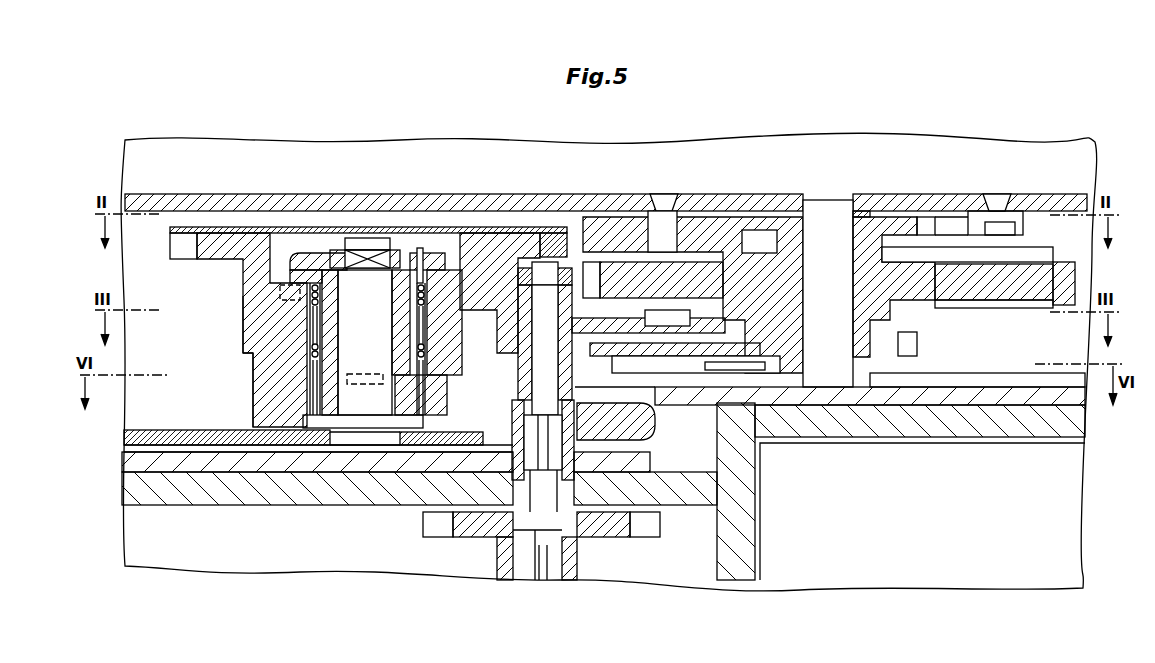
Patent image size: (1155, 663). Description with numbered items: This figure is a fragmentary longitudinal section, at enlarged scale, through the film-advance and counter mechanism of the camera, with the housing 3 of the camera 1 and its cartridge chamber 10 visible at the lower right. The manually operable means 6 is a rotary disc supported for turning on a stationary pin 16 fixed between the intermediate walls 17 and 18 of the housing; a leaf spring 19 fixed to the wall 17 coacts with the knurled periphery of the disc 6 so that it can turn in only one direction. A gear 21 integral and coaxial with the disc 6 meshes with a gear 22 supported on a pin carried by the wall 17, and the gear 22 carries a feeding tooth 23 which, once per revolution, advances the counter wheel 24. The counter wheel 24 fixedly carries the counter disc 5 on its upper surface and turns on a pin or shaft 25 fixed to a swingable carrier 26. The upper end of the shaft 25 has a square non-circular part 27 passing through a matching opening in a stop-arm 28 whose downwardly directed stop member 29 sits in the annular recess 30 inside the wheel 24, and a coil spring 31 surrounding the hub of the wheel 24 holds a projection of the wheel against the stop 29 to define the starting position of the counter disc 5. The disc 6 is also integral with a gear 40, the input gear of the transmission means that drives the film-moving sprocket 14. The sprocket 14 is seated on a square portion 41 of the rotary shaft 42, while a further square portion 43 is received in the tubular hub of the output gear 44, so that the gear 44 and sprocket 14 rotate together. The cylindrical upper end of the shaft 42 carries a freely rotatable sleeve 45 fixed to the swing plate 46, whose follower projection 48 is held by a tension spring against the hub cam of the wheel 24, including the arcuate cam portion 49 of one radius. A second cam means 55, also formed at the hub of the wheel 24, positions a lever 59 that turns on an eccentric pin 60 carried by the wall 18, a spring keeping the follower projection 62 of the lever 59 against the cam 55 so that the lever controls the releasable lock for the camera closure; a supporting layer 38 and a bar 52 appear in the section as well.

The machine tool 1 is at (434, 129).
The housing 3 is at (766, 148).
The counter disc 5 is at (210, 230).
The manually operable means 6 is at (1045, 300).
The cartridge chamber 10 is at (823, 553).
The film-moving means 14 is at (470, 527).
The stationary pin 16 is at (823, 216).
The intermediate wall 17 is at (1038, 205).
The intermediate wall 18 is at (905, 393).
The leaf spring 19 is at (948, 256).
The gear 21 is at (925, 222).
The gear 22 is at (705, 228).
The feeding tooth 23 is at (587, 250).
The counter wheel 24 is at (490, 250).
The pin or shaft 25 is at (352, 400).
The swingable carrier 26 is at (215, 432).
The non-circular part 27 is at (368, 238).
The stop-arm 28 is at (308, 262).
The stop member 29 is at (300, 290).
The annular recess 30 is at (455, 290).
The coil spring 31 is at (312, 297).
The layer 38 is at (270, 455).
The gear 40 is at (918, 345).
The non-circular portion 41 is at (527, 562).
The rotary shaft 42 is at (547, 517).
The non-circular portion 43 is at (563, 438).
The output gear 44 is at (476, 378).
The sleeve 45 is at (525, 290).
The swing plate 46 is at (613, 330).
The follower projection 48 is at (487, 325).
The arcuate cam portion 49 is at (231, 341).
The bar 52 is at (712, 343).
The second cam means 55 is at (241, 389).
The lever 59 is at (680, 378).
The eccentric pin 60 is at (745, 372).
The follower projection 62 is at (367, 386).